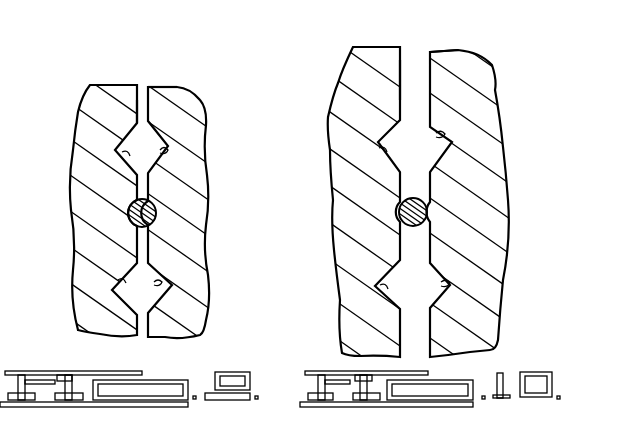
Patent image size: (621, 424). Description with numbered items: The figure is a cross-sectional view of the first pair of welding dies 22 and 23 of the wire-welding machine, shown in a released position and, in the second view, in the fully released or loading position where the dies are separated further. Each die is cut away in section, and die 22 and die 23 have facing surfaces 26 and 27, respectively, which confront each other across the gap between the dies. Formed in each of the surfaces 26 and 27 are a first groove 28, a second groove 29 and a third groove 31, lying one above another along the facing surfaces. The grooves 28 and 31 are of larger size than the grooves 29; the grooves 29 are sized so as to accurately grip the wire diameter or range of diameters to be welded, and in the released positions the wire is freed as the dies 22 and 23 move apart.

In FIG. 9, the welding die 22 is at (210, 94).
In FIG. 10, the welding die 22 is at (476, 42).
In FIG. 9, the welding die 23 is at (112, 78).
In FIG. 10, the welding die 23 is at (379, 39).
In FIG. 9, the facing surface 26 is at (155, 100).
In FIG. 10, the facing surface 26 is at (430, 77).
In FIG. 9, the facing surface 27 is at (143, 122).
In FIG. 10, the facing surface 27 is at (401, 89).
In FIG. 9, the first groove 28 is at (167, 148).
In FIG. 10, the first groove 28 is at (448, 134).
In FIG. 9, the second groove 29 is at (156, 214).
In FIG. 10, the second groove 29 is at (445, 198).
In FIG. 9, the third groove 31 is at (160, 284).
In FIG. 10, the third groove 31 is at (452, 283).